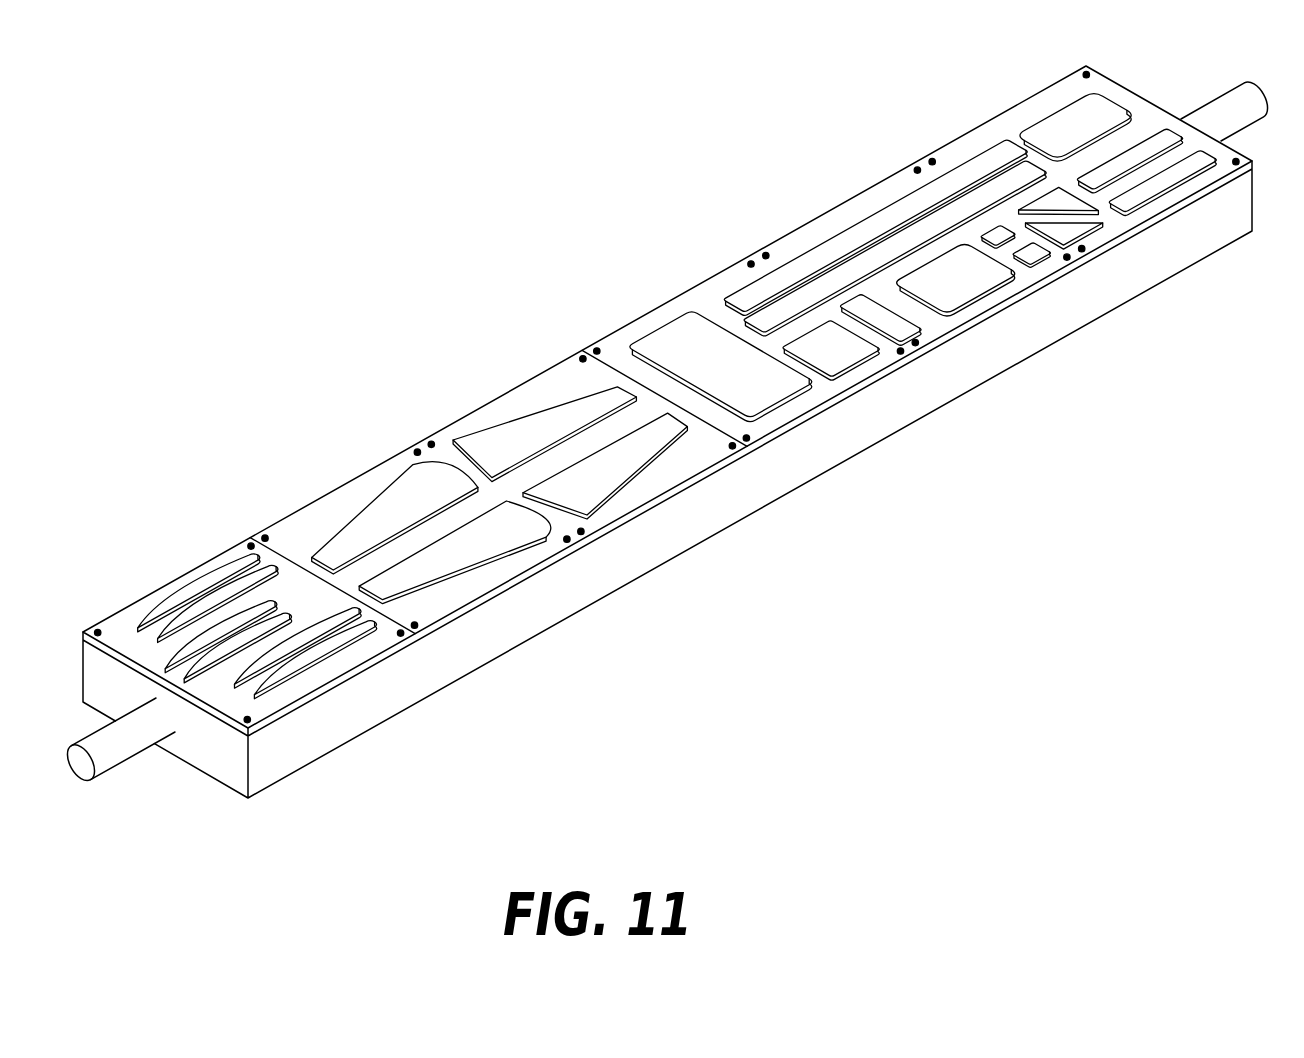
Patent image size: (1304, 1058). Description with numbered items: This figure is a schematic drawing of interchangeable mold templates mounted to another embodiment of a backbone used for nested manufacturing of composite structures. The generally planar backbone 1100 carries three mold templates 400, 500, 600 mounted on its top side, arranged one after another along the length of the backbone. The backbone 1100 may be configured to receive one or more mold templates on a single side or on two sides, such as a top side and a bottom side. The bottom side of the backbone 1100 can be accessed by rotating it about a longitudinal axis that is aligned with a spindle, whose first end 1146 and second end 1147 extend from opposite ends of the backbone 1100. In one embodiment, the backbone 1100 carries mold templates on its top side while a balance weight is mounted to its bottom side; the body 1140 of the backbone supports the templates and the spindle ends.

The backbone 1100 is at (407, 223).
The mold template 400 is at (133, 626).
The mold template 500 is at (308, 532).
The mold template 600 is at (1000, 132).
The housing body 1140 is at (1133, 295).
The first end of spindle 1146 is at (98, 742).
The second end of spindle 1147 is at (1245, 98).